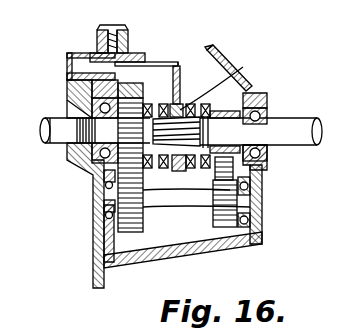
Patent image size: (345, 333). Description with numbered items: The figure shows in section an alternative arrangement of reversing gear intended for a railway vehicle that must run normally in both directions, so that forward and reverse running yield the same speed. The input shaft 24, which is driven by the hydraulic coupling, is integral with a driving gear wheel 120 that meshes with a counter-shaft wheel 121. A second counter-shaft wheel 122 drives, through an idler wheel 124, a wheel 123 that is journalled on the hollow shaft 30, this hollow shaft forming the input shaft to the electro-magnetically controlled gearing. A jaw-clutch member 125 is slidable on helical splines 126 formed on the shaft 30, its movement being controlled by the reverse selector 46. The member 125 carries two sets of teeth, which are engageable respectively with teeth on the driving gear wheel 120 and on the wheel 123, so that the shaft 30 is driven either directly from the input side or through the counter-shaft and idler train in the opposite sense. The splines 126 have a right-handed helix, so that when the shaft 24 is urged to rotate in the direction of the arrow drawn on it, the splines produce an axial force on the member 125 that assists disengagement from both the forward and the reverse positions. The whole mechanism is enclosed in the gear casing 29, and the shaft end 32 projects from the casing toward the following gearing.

The input shaft 24 is at (58, 132).
The gear housing 29 is at (95, 240).
The hollow shaft 30 is at (273, 117).
The shaft end 32 is at (300, 137).
The reverse selector 46 is at (132, 58).
The driving gear wheel 120 is at (177, 64).
The counter-shaft wheel 121 is at (127, 235).
The counter-shaft wheel 122 is at (222, 230).
The wheel 123 is at (233, 110).
The idler wheel 124 is at (262, 176).
The jaw-clutch member 125 is at (237, 80).
The helical splines 126 is at (172, 145).